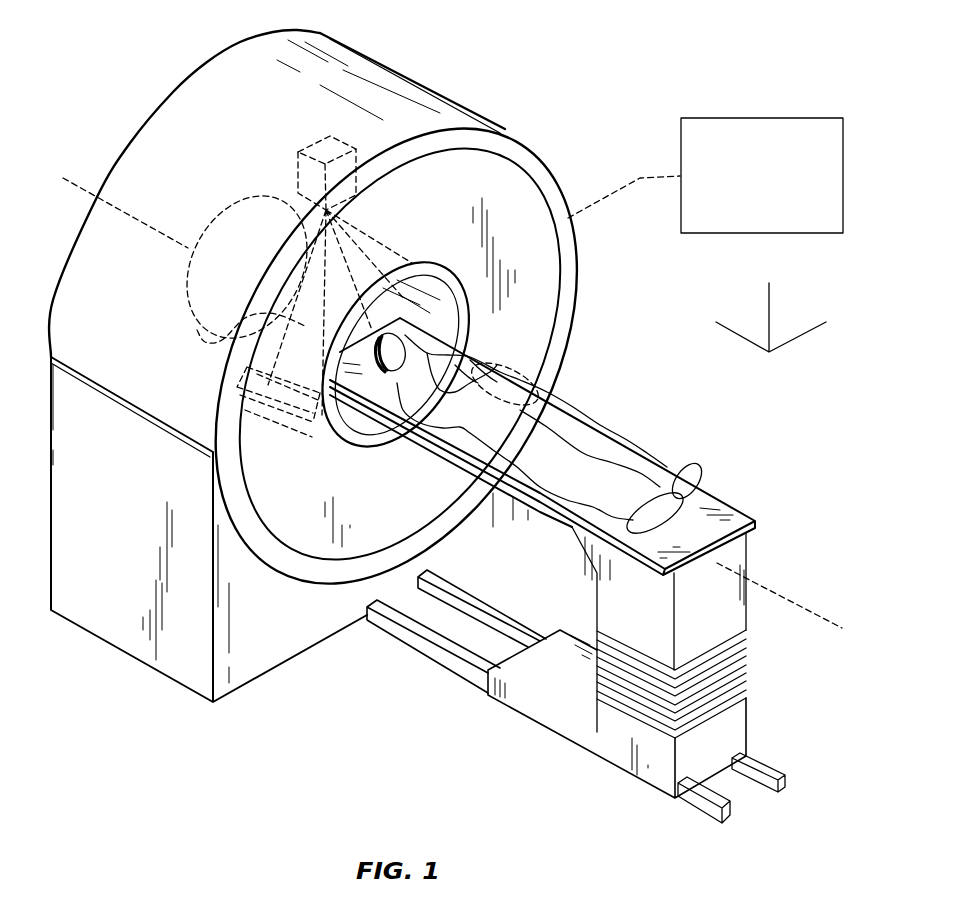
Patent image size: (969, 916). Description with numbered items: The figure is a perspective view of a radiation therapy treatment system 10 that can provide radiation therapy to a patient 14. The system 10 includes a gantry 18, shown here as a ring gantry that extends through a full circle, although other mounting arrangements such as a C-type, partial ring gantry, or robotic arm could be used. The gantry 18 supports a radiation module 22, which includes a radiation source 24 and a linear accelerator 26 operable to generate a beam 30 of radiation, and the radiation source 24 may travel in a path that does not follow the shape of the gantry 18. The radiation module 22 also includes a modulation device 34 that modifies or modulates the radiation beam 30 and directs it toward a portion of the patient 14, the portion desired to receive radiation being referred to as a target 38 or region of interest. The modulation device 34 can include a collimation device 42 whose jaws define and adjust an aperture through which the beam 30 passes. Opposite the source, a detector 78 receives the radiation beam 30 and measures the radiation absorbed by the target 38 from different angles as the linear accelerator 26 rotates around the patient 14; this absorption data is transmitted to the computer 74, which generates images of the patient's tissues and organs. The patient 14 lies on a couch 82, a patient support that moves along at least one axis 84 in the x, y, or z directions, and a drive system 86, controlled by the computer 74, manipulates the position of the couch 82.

The radiation therapy treatment system 10 is at (593, 41).
The patient 14 is at (592, 430).
The gantry 18 is at (120, 155).
The radiation module 22 is at (315, 133).
The radiation source 24 is at (297, 160).
The linear accelerator 26 is at (262, 190).
The beam of radiation 30 is at (214, 340).
The modulation device 34 is at (347, 215).
The target 38 is at (540, 368).
The collimation device 42 is at (348, 231).
The computer 74 is at (775, 118).
The detector 78 is at (268, 412).
The couch 82 is at (711, 494).
The axis 84 is at (788, 593).
The drive system 86 is at (724, 609).